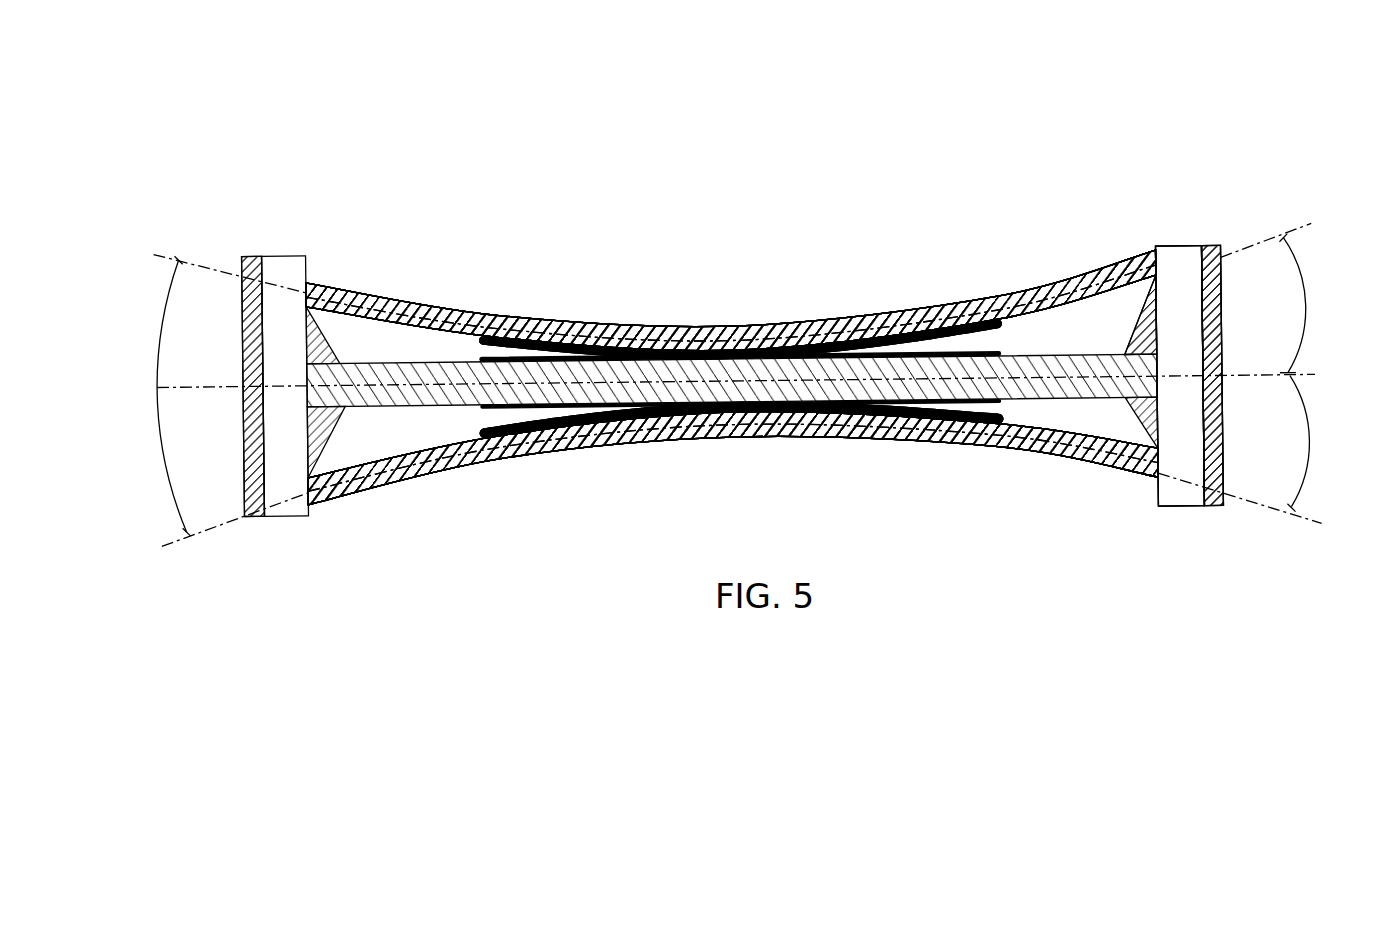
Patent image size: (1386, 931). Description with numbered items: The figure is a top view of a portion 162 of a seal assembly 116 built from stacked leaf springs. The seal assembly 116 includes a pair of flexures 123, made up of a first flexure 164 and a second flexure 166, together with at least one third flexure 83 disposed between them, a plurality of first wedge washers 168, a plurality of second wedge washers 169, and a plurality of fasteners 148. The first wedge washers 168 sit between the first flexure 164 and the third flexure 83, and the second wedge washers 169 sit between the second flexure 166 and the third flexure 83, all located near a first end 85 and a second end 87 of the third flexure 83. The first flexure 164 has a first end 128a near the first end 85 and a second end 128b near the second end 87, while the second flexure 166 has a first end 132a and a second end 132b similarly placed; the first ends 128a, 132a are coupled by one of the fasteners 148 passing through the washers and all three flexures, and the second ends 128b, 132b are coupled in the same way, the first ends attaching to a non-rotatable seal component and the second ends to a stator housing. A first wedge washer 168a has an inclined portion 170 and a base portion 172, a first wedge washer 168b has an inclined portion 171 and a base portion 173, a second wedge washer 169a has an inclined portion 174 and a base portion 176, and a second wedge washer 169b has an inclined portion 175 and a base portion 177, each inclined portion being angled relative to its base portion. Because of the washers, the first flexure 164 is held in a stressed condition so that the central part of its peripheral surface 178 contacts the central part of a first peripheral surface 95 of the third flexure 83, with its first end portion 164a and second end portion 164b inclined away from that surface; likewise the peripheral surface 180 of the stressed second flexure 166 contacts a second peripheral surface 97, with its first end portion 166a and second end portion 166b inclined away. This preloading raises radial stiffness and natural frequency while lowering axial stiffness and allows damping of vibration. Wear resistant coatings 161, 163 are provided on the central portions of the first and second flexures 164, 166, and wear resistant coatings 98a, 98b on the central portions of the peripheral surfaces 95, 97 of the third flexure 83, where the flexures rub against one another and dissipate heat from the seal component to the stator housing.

The portion of the seal assembly 162 is at (1243, 47).
The seal assembly 116 is at (918, 270).
The first flexure 164 is at (410, 300).
The first end portion of the first flexure 164a is at (1030, 292).
The second end portion of the first flexure 164b is at (493, 308).
The first peripheral surface 95 is at (1000, 312).
The inclined portion 171 is at (332, 275).
The wear resistant coating 98a is at (485, 350).
The peripheral surface of the first flexure 178 is at (587, 322).
The wear resistant coating 161 is at (540, 335).
The second flexure 166 is at (1028, 462).
The first end portion of the second flexure 166a is at (1070, 467).
The second end portion of the second flexure 166b is at (392, 477).
The second peripheral surface 97 is at (1000, 447).
The third flexure 83 is at (425, 470).
The inclined portion 175 is at (317, 497).
The wear resistant coating 98b is at (482, 430).
The peripheral surface of the second flexure 180 is at (615, 437).
The wear resistant coating 163 is at (555, 418).
The pair of flexures 123 is at (378, 447).
The base portion 173 is at (302, 368).
The second end of the third flexure 87 is at (243, 394).
The first wedge washers 168 is at (318, 275).
The base portion 177 is at (357, 470).
The inclined portion 170 is at (1143, 263).
The base portion 172 is at (1103, 275).
The second wedge washers 169 is at (1123, 480).
The fasteners 148 is at (282, 510).
The inclined portion 174 is at (1155, 470).
The base portion 176 is at (1160, 400).
The first wedge washer 168b is at (240, 313).
The second wedge washer 169b is at (240, 458).
The first wedge washer 168a is at (1258, 283).
The second wedge washer 169a is at (1258, 412).
The first end of the third flexure 85 is at (1252, 350).
The second end of the first flexure 128b is at (240, 262).
The first end of the first flexure 128a is at (1207, 242).
The second end of the second flexure 132b is at (243, 498).
The first end of the second flexure 132a is at (1217, 507).